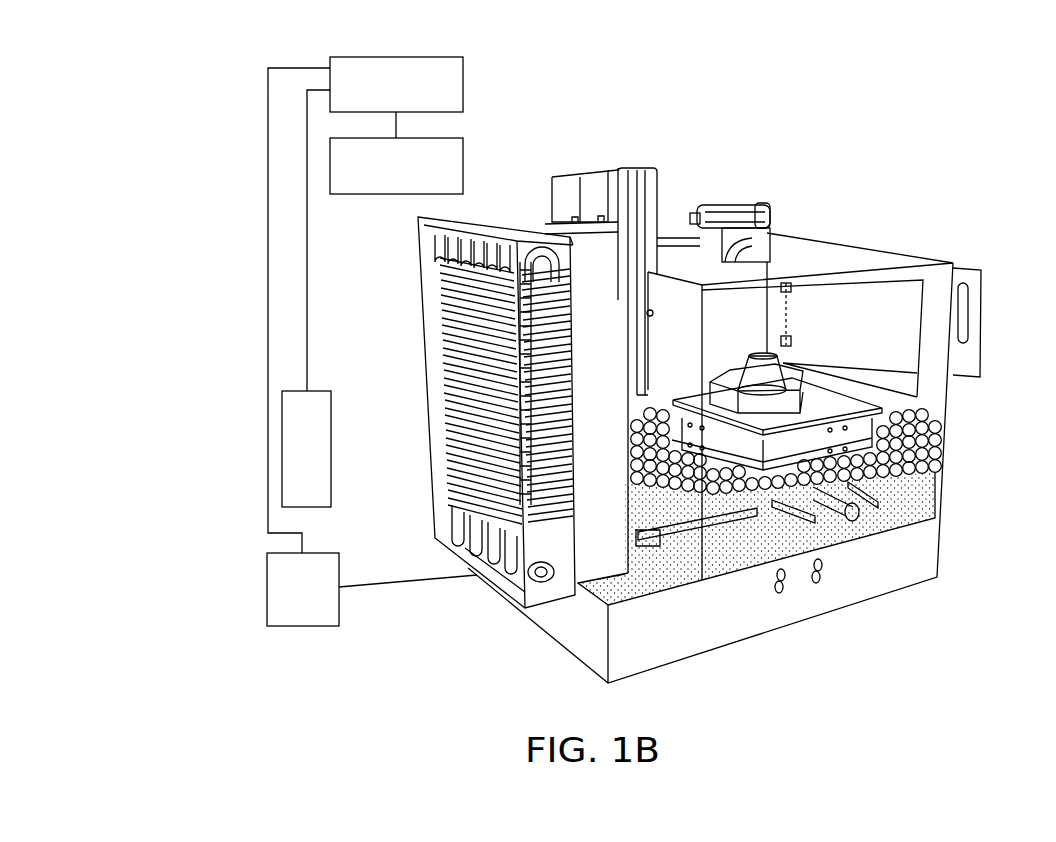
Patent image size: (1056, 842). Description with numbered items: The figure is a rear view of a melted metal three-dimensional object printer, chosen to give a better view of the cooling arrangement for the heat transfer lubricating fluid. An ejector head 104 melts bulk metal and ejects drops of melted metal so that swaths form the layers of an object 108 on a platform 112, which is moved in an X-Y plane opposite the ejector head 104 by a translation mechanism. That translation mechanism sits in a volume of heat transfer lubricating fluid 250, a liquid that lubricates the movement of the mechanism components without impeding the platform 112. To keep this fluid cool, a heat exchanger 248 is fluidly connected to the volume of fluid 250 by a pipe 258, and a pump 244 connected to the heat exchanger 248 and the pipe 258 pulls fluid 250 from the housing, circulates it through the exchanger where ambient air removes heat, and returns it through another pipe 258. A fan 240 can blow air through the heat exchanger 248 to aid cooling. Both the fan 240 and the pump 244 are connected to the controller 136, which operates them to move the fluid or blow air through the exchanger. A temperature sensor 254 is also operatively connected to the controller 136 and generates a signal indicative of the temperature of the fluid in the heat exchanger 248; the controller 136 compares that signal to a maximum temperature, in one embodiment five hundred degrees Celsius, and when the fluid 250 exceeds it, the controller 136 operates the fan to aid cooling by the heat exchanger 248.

The controller 136 is at (463, 83).
The temperature sensor 254 is at (463, 141).
The fan 240 is at (322, 390).
The pump 244 is at (267, 590).
The heat exchanger 248 is at (483, 225).
The ejector head 104 is at (735, 203).
The object 108 is at (777, 368).
The platform 112 is at (833, 402).
The heat transfer lubricating fluid 250 is at (930, 478).
The pipe 258 is at (641, 555).